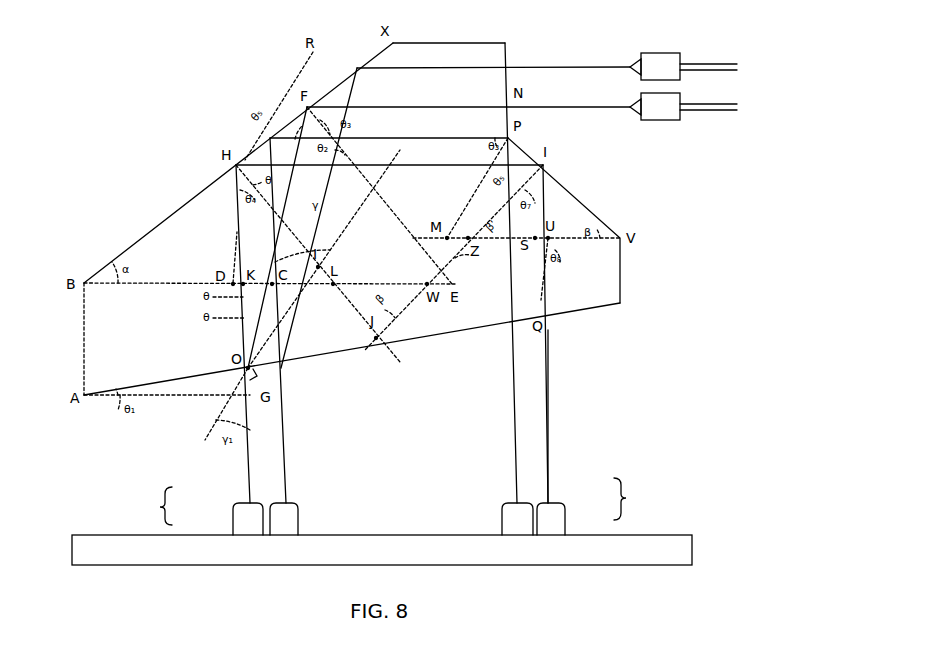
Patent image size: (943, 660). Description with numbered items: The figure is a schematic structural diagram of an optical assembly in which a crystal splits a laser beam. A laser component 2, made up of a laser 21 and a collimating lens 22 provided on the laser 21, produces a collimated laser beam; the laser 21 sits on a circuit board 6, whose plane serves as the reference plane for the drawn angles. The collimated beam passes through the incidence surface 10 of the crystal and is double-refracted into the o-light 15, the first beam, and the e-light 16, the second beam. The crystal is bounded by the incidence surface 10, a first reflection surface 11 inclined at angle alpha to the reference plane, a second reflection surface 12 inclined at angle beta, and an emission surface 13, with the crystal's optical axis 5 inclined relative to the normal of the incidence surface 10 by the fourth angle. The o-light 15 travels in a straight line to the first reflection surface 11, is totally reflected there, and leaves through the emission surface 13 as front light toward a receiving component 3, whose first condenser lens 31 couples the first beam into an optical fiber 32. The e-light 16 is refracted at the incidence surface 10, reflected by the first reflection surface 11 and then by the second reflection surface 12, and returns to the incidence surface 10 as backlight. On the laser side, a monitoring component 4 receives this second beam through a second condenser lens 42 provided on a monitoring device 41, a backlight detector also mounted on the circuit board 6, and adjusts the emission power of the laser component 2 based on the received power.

The laser component 2 is at (157, 506).
The receiving component 3 is at (755, 152).
The monitoring component 4 is at (631, 499).
The optical axis 5 is at (300, 300).
The circuit board 6 is at (72, 542).
The incidence surface 10 is at (392, 343).
The first reflection surface 11 is at (178, 206).
The second reflection surface 12 is at (566, 196).
The emission surface 13 is at (505, 45).
The o-light 15 is at (565, 108).
The e-light 16 is at (553, 404).
The laser 21 is at (236, 527).
The collimating lens 22 is at (243, 500).
The first condenser lens 31 is at (660, 121).
The optical fiber 32 is at (700, 113).
The monitoring device 41 is at (558, 526).
The second condenser lens 42 is at (552, 500).